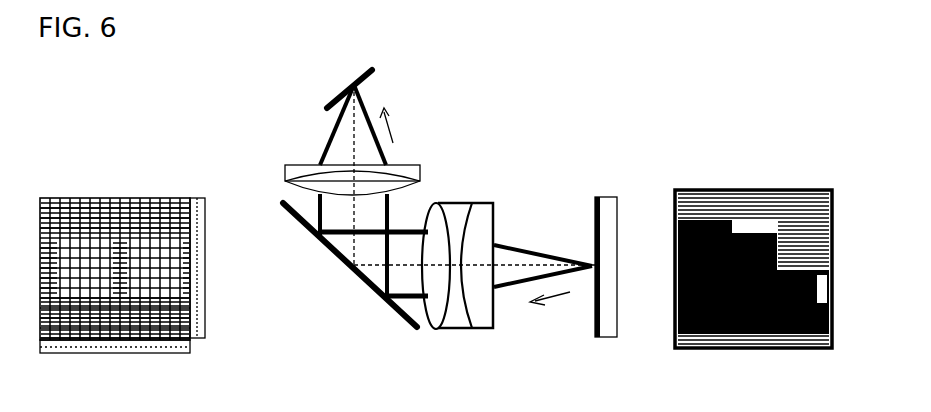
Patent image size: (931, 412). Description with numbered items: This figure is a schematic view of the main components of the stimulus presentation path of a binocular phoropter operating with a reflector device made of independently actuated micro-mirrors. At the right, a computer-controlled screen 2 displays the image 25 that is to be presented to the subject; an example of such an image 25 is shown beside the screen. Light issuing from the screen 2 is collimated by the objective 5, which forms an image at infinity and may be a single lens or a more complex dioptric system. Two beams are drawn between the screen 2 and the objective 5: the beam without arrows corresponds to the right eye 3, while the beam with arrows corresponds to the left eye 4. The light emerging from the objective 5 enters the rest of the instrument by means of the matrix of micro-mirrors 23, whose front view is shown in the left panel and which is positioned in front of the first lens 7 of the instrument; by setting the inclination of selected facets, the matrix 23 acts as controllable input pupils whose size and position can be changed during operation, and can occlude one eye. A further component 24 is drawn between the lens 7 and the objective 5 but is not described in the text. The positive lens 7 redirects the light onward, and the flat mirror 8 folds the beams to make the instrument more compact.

The screen 2 is at (605, 195).
The right eye 3 is at (523, 243).
The left eye 4 is at (578, 279).
The objective 5 is at (483, 332).
The positive lens 7 is at (410, 165).
The flat mirror 8 is at (338, 89).
The matrix of micro-mirrors 23 is at (77, 194).
The beam splitter 24 is at (380, 303).
The image 25 is at (723, 187).